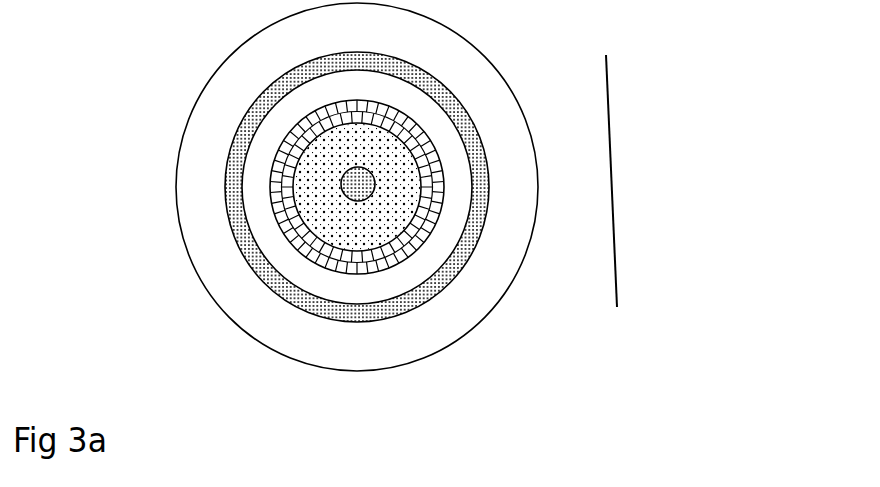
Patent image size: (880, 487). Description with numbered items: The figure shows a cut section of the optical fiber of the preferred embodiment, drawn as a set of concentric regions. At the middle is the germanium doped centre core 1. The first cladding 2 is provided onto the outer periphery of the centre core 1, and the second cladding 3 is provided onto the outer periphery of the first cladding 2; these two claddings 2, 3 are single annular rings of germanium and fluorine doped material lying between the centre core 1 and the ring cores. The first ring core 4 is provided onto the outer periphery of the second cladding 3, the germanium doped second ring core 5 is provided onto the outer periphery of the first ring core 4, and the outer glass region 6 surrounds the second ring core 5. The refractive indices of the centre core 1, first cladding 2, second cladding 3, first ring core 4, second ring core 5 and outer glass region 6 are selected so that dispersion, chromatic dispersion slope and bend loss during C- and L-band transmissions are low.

The centre core 1 is at (375, 183).
The first cladding 2 is at (380, 232).
The second cladding 3 is at (455, 273).
The first ring core 4 is at (448, 137).
The second ring core 5 is at (478, 155).
The outer glass region 6 is at (490, 88).